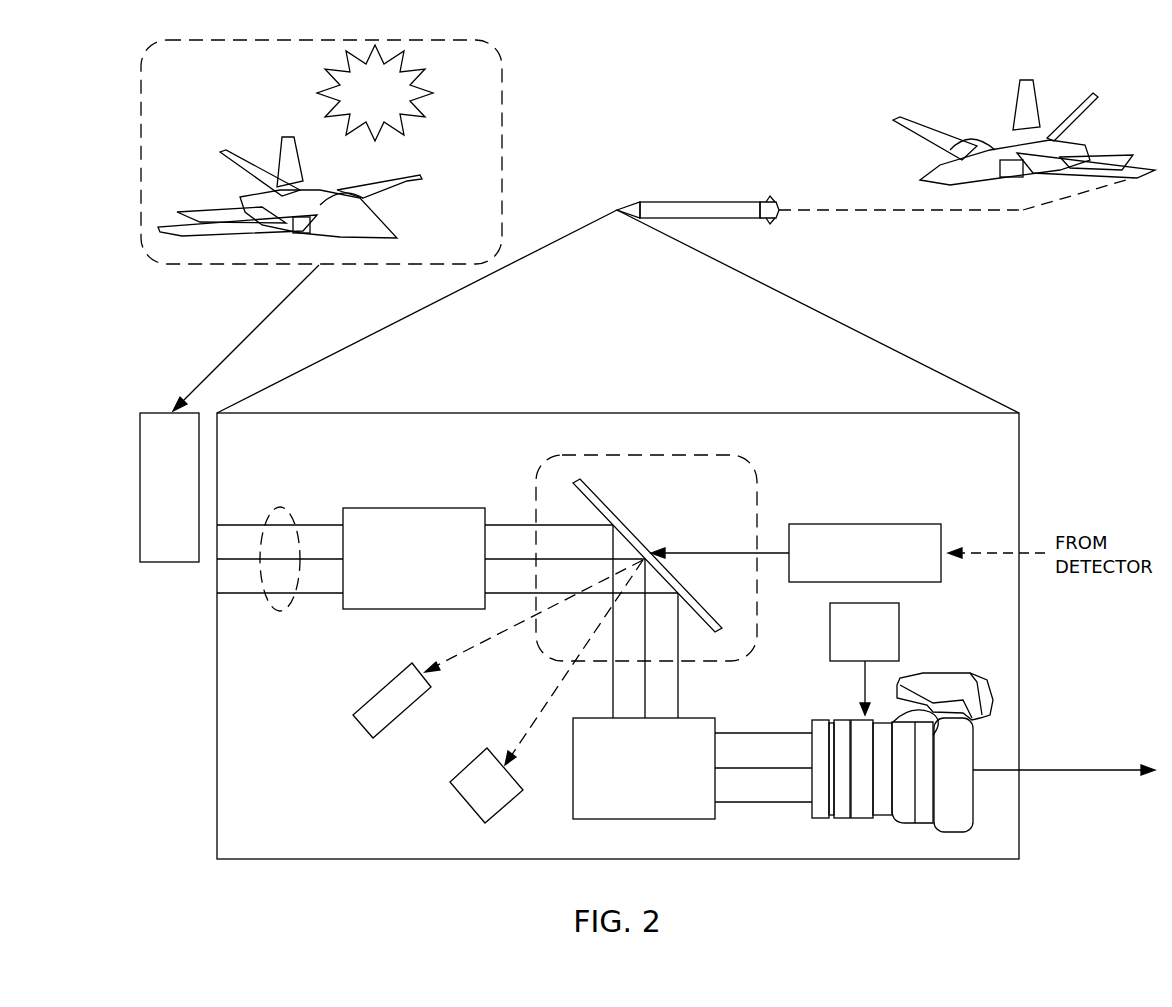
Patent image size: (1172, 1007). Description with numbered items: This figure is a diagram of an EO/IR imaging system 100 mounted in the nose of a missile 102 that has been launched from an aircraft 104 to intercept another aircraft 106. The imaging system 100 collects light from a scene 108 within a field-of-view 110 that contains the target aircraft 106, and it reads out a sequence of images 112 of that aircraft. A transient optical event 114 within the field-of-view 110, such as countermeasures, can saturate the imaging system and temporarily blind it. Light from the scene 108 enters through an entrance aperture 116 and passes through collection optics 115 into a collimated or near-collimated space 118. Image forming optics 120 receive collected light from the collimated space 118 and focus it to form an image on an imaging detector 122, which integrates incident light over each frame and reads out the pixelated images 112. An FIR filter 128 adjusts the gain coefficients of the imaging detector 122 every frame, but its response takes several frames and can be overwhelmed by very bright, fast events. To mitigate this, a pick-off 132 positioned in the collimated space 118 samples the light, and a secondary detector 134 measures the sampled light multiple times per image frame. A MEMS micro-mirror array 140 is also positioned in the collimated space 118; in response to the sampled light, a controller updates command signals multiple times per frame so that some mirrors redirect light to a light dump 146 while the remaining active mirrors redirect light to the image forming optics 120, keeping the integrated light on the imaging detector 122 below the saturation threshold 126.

The EO/IR imaging system 100 is at (655, 404).
The missile 102 is at (700, 202).
The aircraft 104 is at (938, 158).
The aircraft 106 is at (378, 212).
The scene 108 is at (140, 490).
The field-of-view 110 is at (502, 150).
The sequence of images 112 is at (1080, 773).
The transient optical event 114 is at (415, 118).
The collection optics 115 is at (412, 508).
The entrance aperture 116 is at (282, 507).
The collimated or near-collimated space 118 is at (648, 455).
The image forming optics 120 is at (645, 819).
The imaging detector 122 is at (940, 672).
The saturation threshold 126 is at (865, 553).
The FIR filter 128 is at (899, 630).
The pick-off 132 is at (656, 548).
The secondary detector 134 is at (385, 686).
The MEMS micro-mirror array 140 is at (603, 505).
The light dump 146 is at (470, 766).